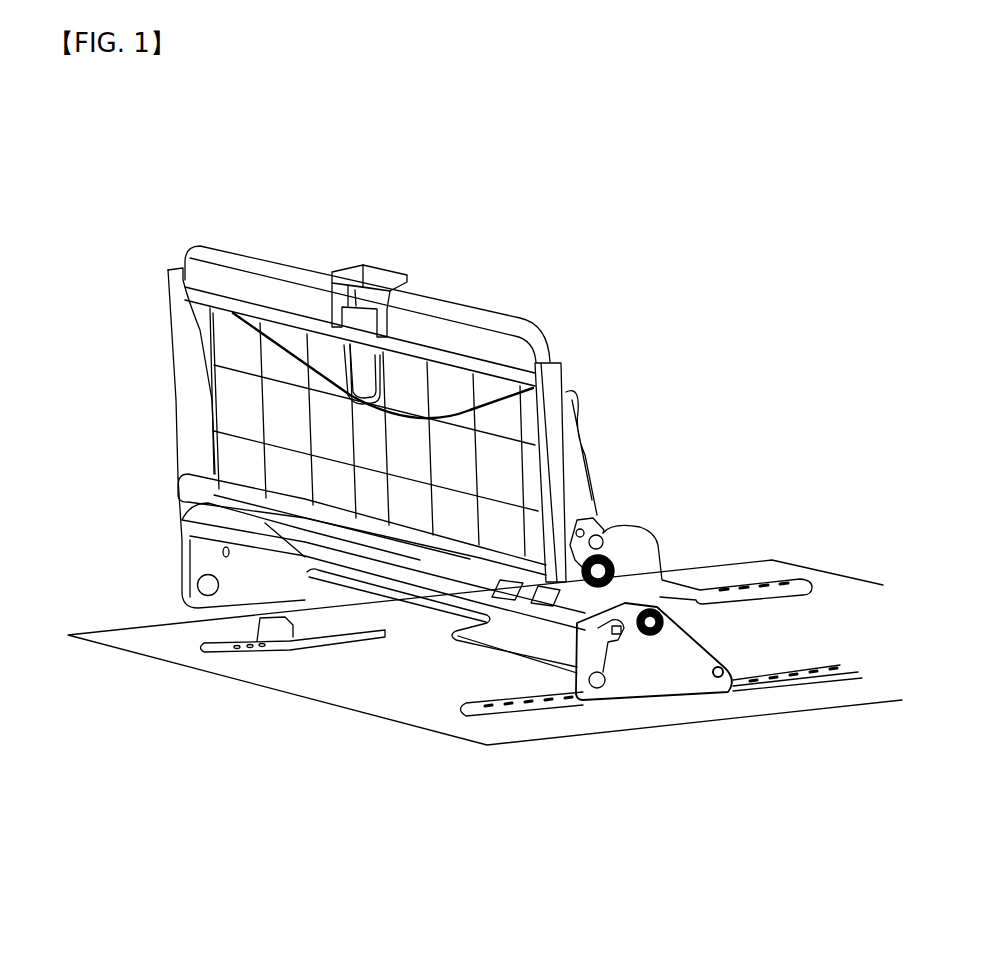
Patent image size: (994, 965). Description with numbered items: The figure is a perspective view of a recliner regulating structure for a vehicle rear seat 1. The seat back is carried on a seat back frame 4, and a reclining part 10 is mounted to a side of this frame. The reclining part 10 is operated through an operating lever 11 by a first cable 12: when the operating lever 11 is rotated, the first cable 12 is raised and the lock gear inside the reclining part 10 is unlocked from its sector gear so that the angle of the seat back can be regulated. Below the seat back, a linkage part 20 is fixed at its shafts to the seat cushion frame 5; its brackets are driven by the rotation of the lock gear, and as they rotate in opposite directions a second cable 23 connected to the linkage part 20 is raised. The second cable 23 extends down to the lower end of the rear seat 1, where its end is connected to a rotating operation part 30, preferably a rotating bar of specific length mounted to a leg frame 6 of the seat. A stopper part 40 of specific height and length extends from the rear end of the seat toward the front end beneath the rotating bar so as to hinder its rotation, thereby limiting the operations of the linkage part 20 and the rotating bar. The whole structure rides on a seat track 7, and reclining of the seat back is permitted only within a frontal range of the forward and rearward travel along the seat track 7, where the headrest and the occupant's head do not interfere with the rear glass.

The rear seat 1 is at (402, 255).
The seat back frame 4 is at (560, 383).
The seat cushion frame 5 is at (680, 677).
The leg frame 6 is at (517, 707).
The seat track 7 is at (797, 682).
The reclining part 10 is at (637, 519).
The operating lever 11 is at (337, 283).
The first cable 12 is at (457, 385).
The linkage part 20 is at (625, 655).
The second cable 23 is at (483, 622).
The rotating operation part 30 is at (300, 630).
The stopper part 40 is at (310, 650).